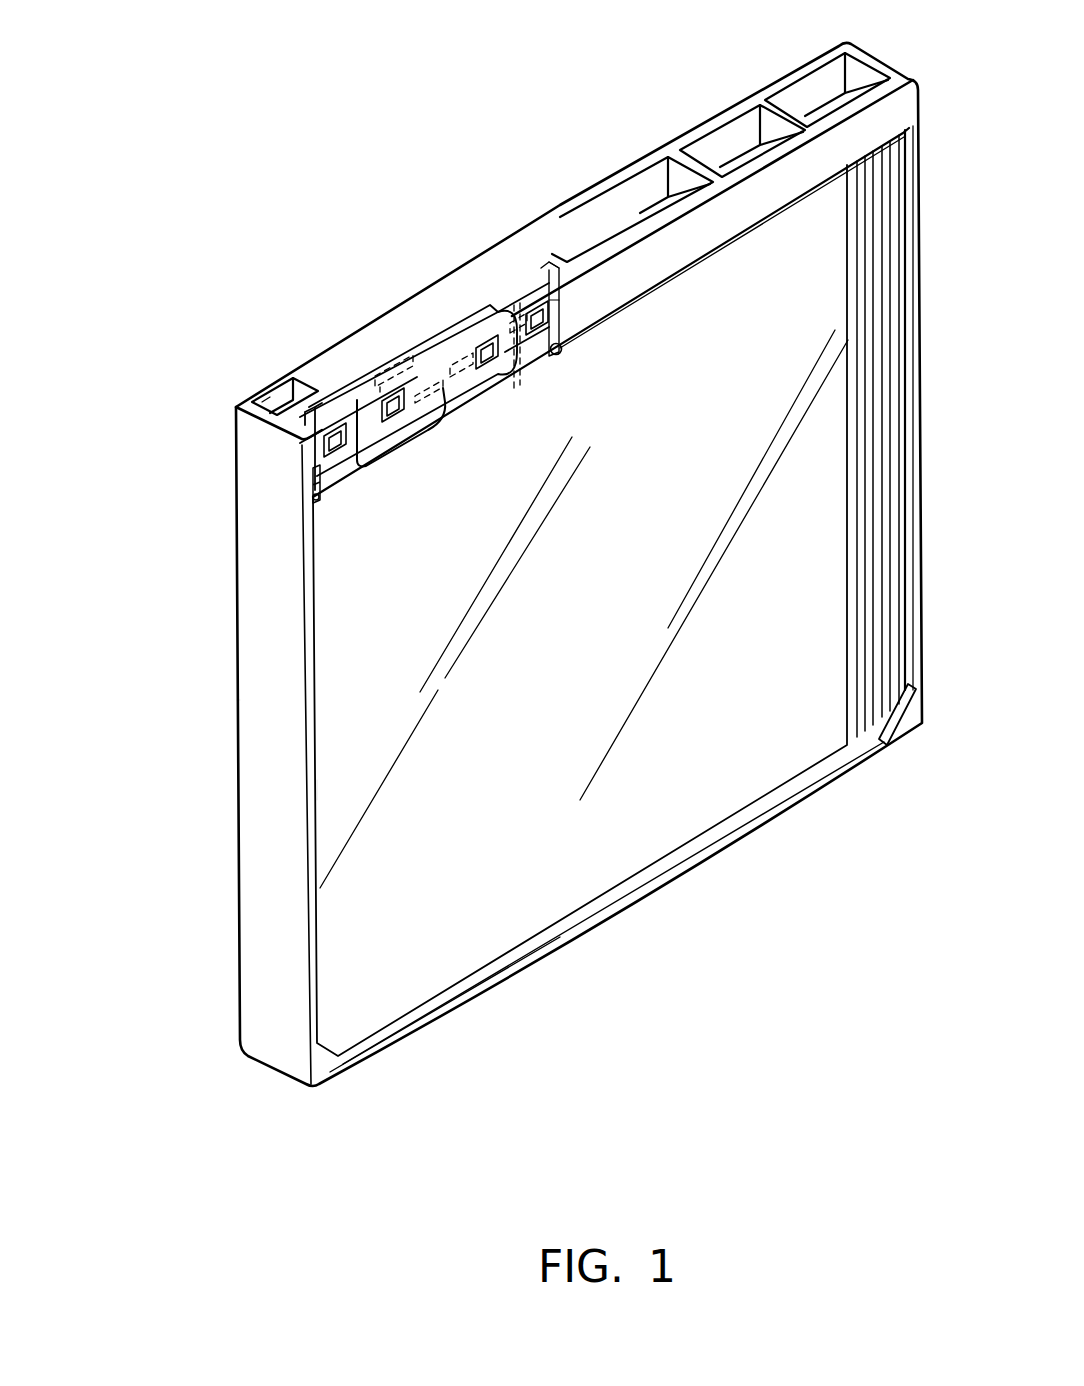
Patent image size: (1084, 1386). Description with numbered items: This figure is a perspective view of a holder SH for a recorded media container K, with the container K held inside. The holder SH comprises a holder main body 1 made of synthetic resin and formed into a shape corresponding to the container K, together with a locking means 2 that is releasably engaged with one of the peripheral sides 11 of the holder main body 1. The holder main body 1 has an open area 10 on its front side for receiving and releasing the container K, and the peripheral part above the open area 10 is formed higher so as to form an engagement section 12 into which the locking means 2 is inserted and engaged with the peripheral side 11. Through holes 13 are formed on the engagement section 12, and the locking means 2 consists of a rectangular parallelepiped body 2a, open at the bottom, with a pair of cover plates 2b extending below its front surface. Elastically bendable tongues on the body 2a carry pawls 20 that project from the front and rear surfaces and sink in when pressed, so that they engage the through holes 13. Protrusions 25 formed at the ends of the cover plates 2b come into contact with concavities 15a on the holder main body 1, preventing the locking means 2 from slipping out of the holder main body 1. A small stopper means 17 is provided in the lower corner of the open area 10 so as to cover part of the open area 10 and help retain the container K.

The holder main body 1 is at (887, 115).
The locking means 2 is at (395, 277).
The rectangular parallelepiped body 2a is at (418, 390).
The cover plates 2b is at (510, 132).
The open area 10 is at (331, 789).
The peripheral side 11 is at (558, 268).
The engagement section 12 is at (265, 402).
The through holes 13 is at (478, 350).
The concavities 15a is at (560, 345).
The stopper means 17 is at (327, 1065).
The pawls 20 is at (345, 395).
The protrusions 25 is at (565, 352).
The recorded media container K is at (390, 728).
The holder SH is at (220, 789).